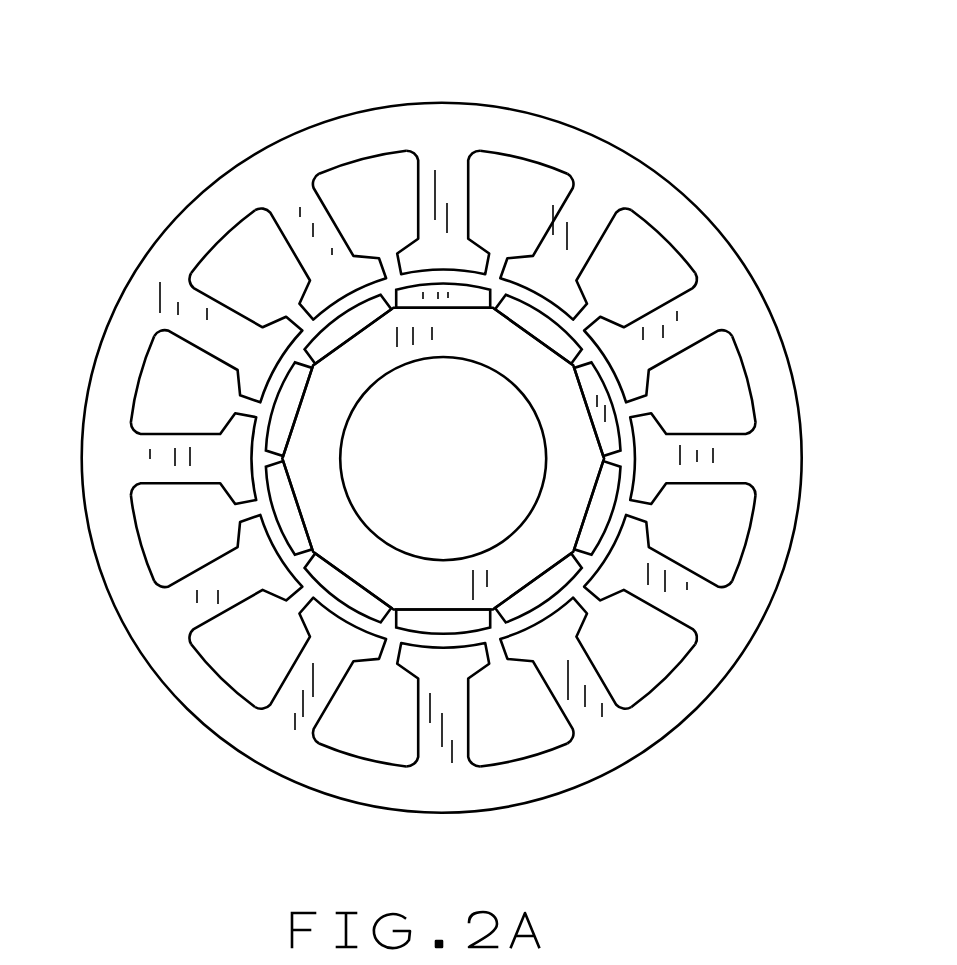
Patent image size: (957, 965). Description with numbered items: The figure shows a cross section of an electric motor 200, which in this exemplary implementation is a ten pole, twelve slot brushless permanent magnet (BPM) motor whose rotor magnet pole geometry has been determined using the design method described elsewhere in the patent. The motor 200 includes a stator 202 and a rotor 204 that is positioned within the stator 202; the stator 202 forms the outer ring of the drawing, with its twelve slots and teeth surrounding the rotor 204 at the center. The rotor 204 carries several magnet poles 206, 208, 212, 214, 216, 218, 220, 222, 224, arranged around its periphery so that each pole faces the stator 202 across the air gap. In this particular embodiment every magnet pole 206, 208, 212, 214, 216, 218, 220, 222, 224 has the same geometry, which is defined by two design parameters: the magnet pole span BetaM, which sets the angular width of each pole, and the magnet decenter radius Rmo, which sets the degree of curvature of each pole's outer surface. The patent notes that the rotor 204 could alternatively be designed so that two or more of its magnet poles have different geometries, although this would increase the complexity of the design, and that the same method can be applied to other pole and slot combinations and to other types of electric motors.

The brushless permanent magnet motor 200 is at (166, 131).
The stator 202 is at (600, 177).
The rotor 204 is at (567, 474).
The magnet pole 206 is at (647, 540).
The magnet pole 208 is at (553, 587).
The magnet pole 212 is at (348, 590).
The magnet pole 214 is at (285, 510).
The magnet pole 216 is at (445, 627).
The magnet pole 218 is at (350, 323).
The magnet pole 220 is at (448, 292).
The magnet pole 222 is at (543, 327).
The magnet pole 224 is at (594, 398).